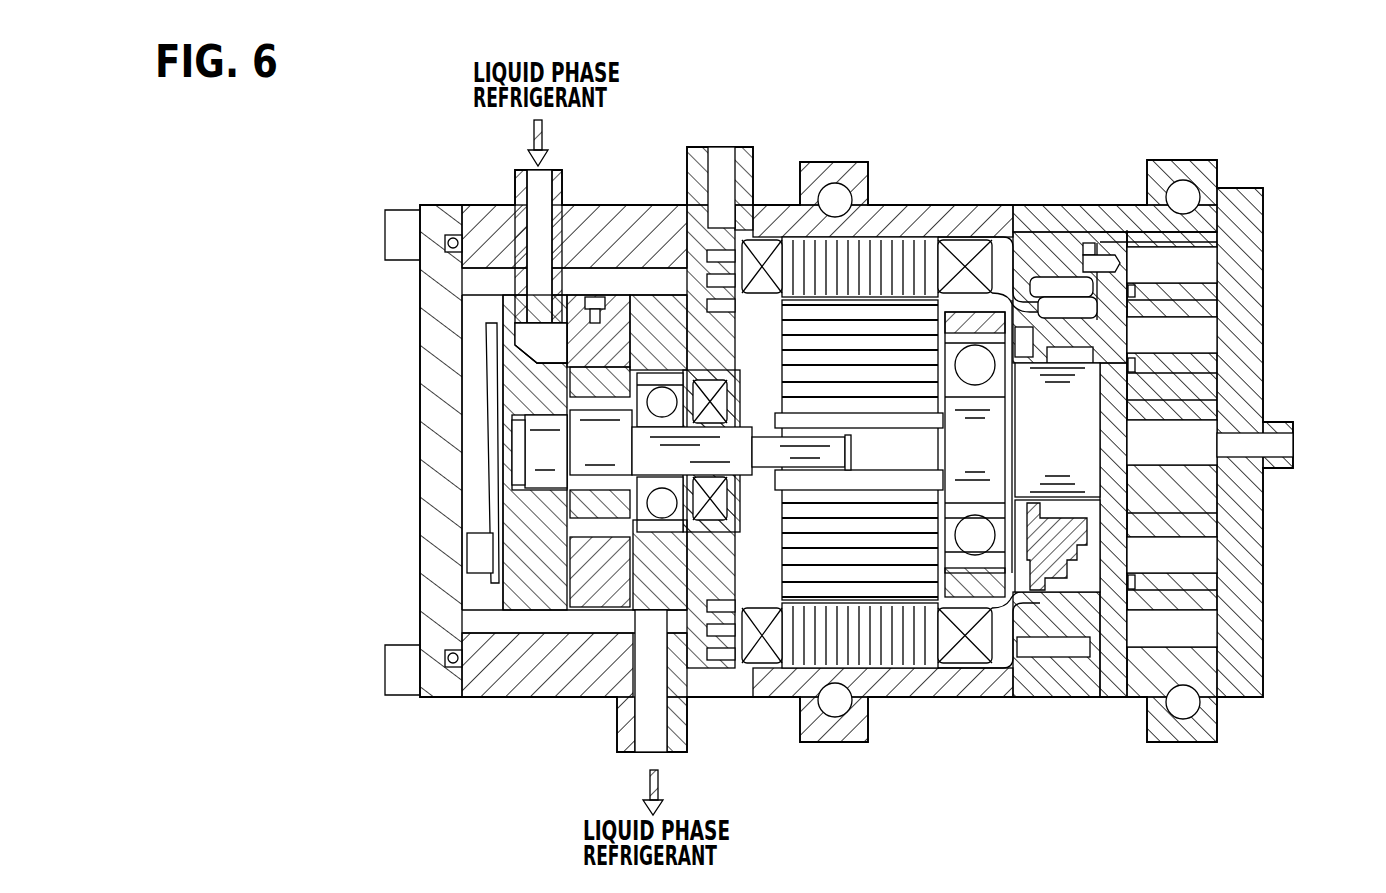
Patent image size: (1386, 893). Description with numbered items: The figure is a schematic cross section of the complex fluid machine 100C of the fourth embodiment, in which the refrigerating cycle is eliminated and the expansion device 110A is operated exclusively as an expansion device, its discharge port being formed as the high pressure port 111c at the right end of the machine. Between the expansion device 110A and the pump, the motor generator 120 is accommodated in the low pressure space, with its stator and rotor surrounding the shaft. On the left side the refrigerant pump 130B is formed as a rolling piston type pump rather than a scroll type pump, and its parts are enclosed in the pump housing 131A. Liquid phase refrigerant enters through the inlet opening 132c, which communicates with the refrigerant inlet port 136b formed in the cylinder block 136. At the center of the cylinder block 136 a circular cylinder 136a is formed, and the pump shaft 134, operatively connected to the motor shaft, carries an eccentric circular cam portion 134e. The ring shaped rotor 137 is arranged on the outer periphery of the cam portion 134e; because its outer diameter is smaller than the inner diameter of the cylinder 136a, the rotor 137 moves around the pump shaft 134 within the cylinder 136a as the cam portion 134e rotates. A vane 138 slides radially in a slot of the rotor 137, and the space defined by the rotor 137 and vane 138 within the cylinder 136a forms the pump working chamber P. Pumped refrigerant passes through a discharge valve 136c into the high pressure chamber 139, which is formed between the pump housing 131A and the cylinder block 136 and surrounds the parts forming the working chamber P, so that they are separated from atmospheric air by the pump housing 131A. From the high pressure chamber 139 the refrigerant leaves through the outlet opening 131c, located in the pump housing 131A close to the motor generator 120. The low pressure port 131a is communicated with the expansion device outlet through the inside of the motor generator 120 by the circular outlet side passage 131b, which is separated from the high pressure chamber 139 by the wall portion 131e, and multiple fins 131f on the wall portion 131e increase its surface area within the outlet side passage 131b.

The complex fluid machine 100C is at (896, 115).
The expansion device 110A is at (1043, 192).
The high pressure port 111c is at (1283, 445).
The motor generator 120 is at (846, 150).
The refrigerant pump 130B is at (428, 190).
The pump housing 131A is at (596, 214).
The low pressure port 131a is at (722, 162).
The outlet side passage 131b is at (770, 185).
The outlet opening 131c is at (643, 720).
The wall portion 131e is at (697, 270).
The fins 131f is at (736, 200).
The inlet opening 132c is at (533, 195).
The pump shaft 134 is at (667, 455).
The cam portion 134e is at (575, 450).
The cylinder block 136 is at (560, 605).
The cylinder 136a is at (585, 590).
The refrigerant inlet port 136b is at (545, 338).
The discharge valve 136c is at (582, 350).
The rotor 137 is at (640, 505).
The vane 138 is at (490, 372).
The high pressure chamber 139 is at (478, 418).
The pump working chamber P is at (590, 545).